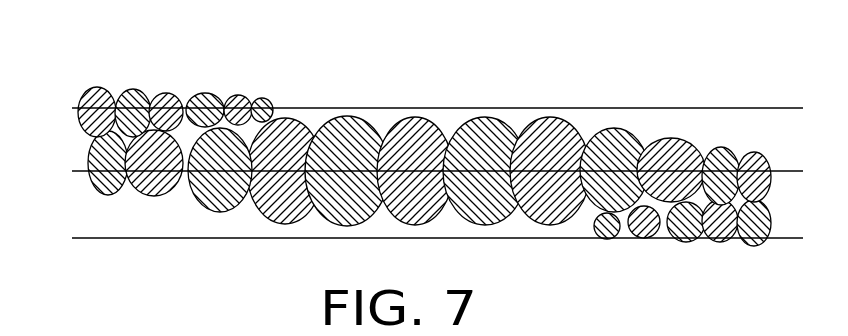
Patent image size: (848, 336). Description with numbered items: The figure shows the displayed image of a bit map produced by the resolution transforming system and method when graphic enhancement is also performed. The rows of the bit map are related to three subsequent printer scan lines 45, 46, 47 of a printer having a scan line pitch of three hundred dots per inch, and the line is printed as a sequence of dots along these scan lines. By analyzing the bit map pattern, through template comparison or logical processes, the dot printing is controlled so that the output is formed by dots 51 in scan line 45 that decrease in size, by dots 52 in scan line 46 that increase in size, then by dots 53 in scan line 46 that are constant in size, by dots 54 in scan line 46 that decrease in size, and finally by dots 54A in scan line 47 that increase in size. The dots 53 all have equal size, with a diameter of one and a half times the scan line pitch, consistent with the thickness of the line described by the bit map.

The scan line 45 is at (72, 108).
The scan line 46 is at (75, 171).
The scan line 47 is at (83, 238).
The dots decreasing in size 51 is at (83, 80).
The dots increasing in size 52 is at (78, 243).
The dots constant in size 53 is at (275, 105).
The dots decreasing in size 54 is at (585, 107).
The dots increasing in size 54A is at (596, 242).